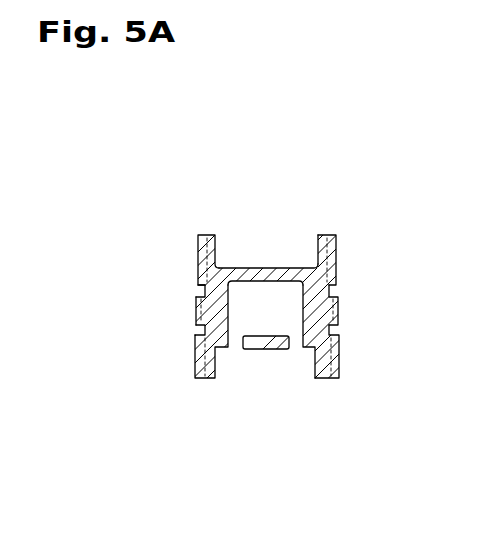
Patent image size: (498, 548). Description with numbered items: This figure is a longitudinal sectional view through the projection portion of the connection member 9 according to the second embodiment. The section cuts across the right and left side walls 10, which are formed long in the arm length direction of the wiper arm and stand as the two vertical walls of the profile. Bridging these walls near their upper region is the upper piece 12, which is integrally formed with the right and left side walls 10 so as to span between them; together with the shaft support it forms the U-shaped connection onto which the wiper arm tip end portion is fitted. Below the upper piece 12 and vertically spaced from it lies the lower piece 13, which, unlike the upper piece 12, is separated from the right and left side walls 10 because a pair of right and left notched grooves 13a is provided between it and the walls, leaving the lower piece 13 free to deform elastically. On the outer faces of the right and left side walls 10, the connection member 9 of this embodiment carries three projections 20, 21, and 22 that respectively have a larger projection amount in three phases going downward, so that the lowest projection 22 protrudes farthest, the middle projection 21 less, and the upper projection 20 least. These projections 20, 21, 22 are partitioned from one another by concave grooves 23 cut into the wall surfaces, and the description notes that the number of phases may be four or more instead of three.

The connection member 9 is at (274, 256).
The right and left side walls 10 is at (369, 259).
The upper piece 12 is at (247, 277).
The lower piece 13 is at (267, 363).
The notched grooves 13a is at (295, 345).
The projection 20 is at (335, 250).
The projection 21 is at (336, 310).
The projection 22 is at (336, 356).
The concave grooves 23 is at (196, 325).